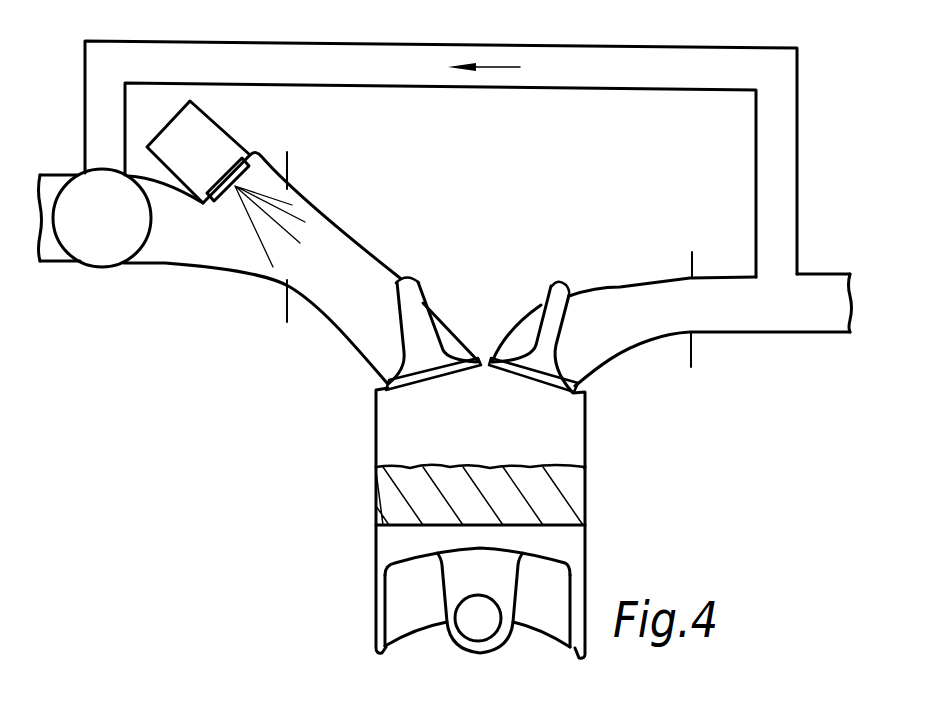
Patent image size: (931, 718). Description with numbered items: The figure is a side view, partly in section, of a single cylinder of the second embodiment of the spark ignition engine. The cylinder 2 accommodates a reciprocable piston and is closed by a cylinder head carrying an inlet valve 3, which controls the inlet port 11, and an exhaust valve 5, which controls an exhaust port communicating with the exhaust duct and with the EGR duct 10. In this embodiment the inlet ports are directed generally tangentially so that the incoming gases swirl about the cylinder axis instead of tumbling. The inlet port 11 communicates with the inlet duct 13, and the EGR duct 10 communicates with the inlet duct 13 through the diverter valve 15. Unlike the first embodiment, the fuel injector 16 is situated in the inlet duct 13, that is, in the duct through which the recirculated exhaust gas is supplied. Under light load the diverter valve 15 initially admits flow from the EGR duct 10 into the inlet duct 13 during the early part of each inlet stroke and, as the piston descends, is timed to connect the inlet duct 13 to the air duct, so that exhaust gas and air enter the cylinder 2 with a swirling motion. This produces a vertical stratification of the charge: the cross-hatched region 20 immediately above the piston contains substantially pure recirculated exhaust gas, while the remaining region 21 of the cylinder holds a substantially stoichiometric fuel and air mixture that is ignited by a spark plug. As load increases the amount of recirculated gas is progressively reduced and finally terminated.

The cylinder 2 is at (373, 433).
The inlet valve 3 is at (420, 330).
The exhaust valve 5 is at (542, 330).
The EGR duct 10 is at (770, 165).
The inlet port 11 is at (357, 265).
The inlet duct 13 is at (222, 242).
The diverter valve 15 is at (115, 267).
The fuel injector 16 is at (212, 153).
The region 20 is at (548, 500).
The region 21 is at (542, 445).